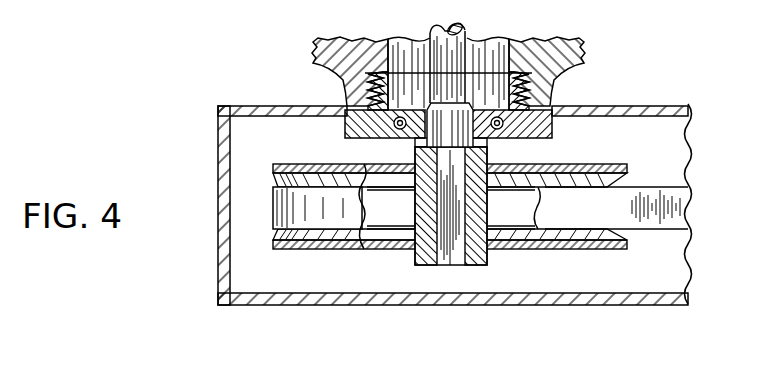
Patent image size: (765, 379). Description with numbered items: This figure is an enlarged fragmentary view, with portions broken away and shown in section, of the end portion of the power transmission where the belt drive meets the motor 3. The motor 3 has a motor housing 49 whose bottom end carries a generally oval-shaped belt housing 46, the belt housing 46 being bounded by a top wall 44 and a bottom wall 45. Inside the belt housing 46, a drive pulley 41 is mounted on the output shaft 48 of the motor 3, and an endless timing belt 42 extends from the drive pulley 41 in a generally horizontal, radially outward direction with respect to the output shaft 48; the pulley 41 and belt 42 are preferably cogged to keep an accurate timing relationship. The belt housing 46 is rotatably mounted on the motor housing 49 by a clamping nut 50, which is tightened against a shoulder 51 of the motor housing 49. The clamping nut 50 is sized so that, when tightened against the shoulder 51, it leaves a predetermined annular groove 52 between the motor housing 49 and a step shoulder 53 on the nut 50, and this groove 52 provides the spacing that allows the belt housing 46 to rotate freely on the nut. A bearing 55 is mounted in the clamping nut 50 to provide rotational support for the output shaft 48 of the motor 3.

The motor 3 is at (353, 53).
The drive pulley 41 is at (300, 252).
The endless timing belt 42 is at (630, 204).
The top wall 44 is at (268, 104).
The bottom wall 45 is at (327, 307).
The belt housing 46 is at (600, 318).
The output shaft 48 is at (446, 265).
The motor housing 49 is at (553, 50).
The clamping nut 50 is at (553, 130).
The shoulder 51 is at (505, 78).
The annular groove 52 is at (353, 100).
The step shoulder 53 is at (356, 128).
The bearing 55 is at (406, 139).